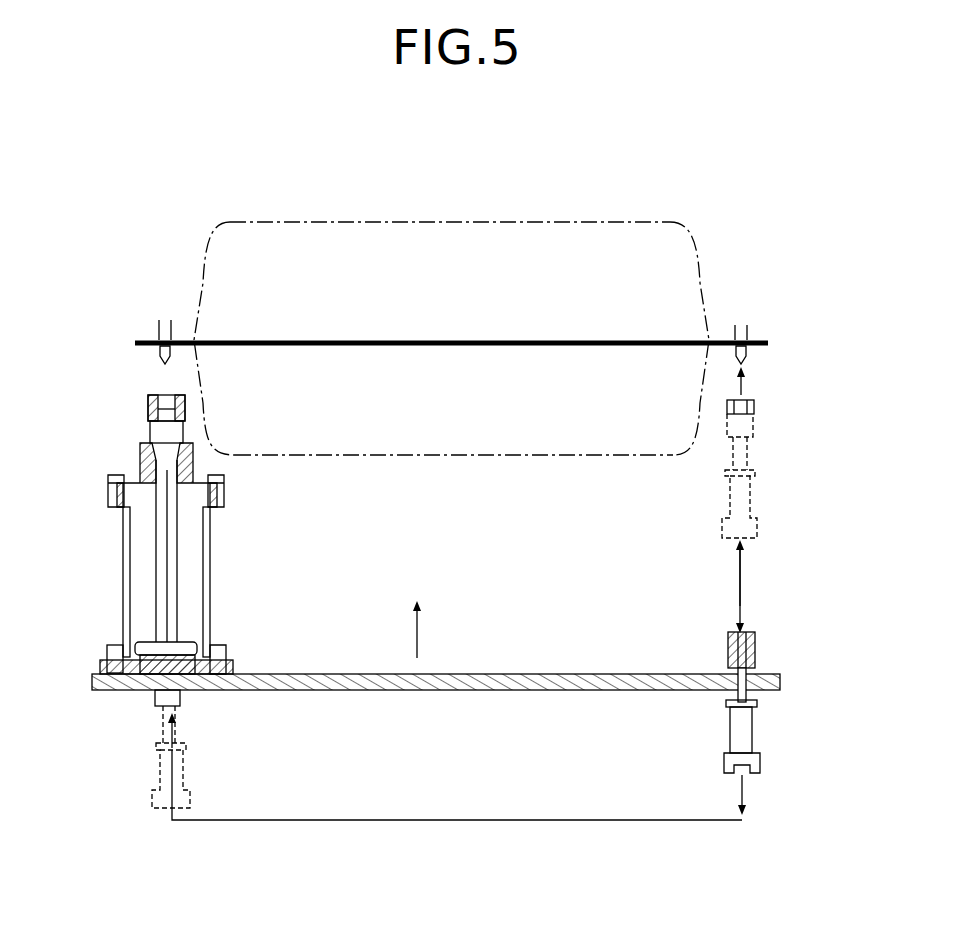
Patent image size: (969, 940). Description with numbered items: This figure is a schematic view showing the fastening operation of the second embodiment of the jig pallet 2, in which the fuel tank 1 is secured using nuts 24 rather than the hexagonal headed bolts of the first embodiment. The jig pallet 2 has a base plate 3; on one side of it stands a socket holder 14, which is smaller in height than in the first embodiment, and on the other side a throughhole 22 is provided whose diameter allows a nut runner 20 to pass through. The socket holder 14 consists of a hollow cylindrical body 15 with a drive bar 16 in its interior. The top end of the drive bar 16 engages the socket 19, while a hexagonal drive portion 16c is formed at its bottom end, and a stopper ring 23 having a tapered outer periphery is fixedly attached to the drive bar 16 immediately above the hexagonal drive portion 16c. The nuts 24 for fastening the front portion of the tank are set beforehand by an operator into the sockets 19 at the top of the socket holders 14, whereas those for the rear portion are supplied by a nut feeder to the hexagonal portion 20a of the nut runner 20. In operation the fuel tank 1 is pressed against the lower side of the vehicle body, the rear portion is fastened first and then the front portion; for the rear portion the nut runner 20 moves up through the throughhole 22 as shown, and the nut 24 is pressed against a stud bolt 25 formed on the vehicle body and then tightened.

The fuel tank 1 is at (494, 222).
The jig pallet 2 is at (512, 655).
The base plate 3 is at (450, 685).
The socket holder 14 is at (162, 534).
The hollow cylindrical body 15 is at (209, 540).
The drive bar 16 is at (167, 581).
The hexagonal drive portion 16c is at (174, 702).
The socket 19 is at (148, 414).
The nut runner 20 is at (740, 632).
The hexagonal portion 20a is at (755, 487).
The throughhole 22 is at (728, 690).
The stopper ring 23 is at (136, 690).
The nut 24 is at (163, 394).
The stud bolt 25 is at (165, 362).